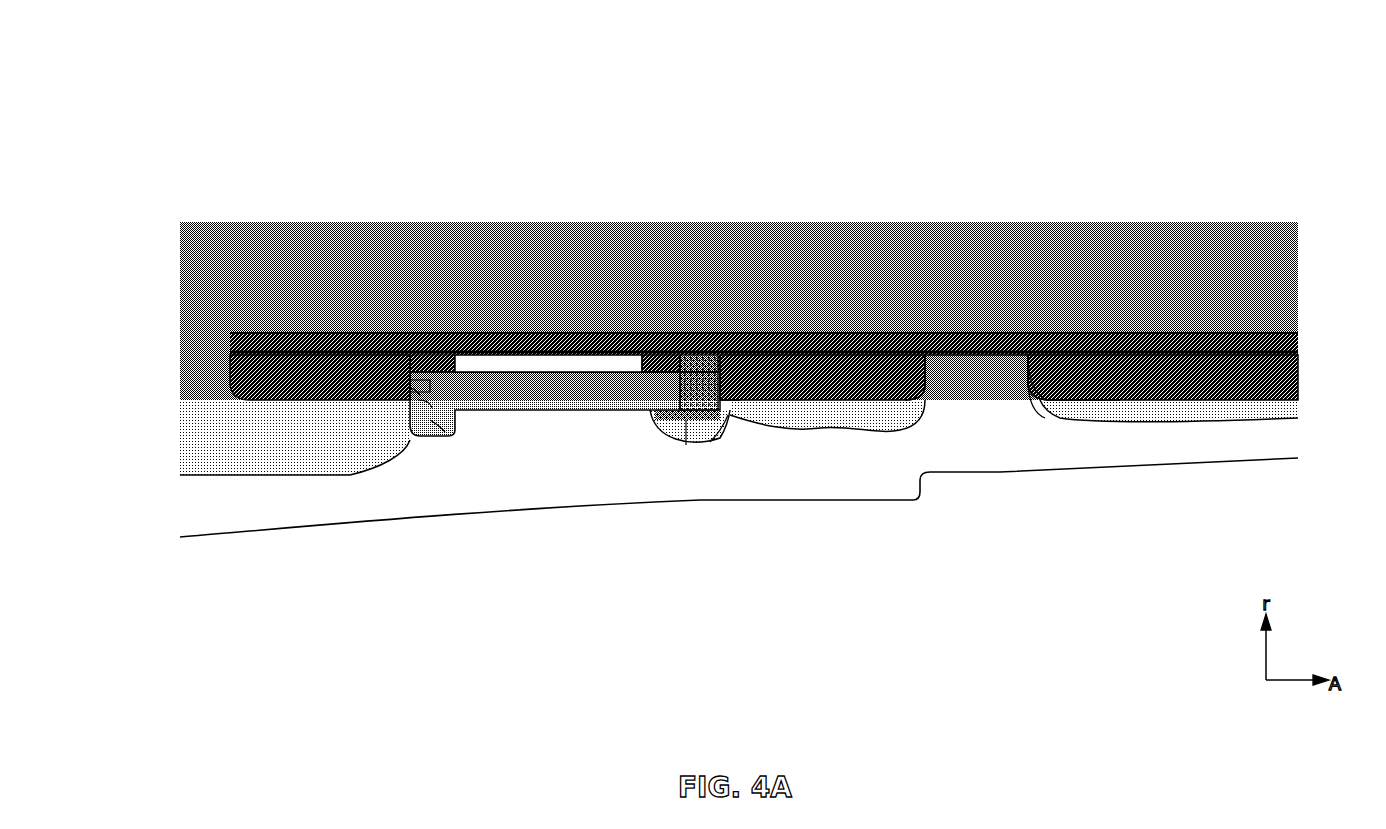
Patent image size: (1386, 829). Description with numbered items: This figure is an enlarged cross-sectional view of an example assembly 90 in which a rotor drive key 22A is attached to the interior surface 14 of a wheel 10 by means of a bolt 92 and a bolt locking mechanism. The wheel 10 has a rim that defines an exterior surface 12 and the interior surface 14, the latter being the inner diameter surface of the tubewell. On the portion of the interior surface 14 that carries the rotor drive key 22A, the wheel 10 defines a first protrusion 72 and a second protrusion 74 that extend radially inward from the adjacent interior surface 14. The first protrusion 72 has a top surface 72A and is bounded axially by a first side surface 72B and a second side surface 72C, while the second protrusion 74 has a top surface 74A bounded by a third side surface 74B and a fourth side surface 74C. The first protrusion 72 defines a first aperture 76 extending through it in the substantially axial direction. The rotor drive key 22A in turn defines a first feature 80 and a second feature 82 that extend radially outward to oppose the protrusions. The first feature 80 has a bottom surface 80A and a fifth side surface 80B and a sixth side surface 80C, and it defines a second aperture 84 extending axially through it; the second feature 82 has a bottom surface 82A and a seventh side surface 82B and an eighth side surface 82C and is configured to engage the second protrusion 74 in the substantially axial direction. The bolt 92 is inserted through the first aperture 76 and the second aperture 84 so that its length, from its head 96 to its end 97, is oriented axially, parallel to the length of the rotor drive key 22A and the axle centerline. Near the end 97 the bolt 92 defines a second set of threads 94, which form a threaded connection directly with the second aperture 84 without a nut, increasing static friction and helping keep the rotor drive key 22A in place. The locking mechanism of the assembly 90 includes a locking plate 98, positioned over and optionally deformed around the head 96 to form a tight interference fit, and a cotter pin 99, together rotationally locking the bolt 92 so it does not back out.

The wheel 10 is at (553, 470).
The exterior surface 12 is at (659, 516).
The interior surface 14 is at (268, 272).
The rotor drive key 22A is at (270, 377).
The first protrusion 72 is at (530, 412).
The top surface 72A is at (514, 352).
The first side surface 72B is at (432, 368).
The second side surface 72C is at (658, 352).
The second protrusion 74 is at (985, 373).
The top surface 74A is at (958, 354).
The third side surface 74B is at (925, 356).
The fourth side surface 74C is at (1025, 372).
The first aperture 76 is at (594, 352).
The first feature 80 is at (702, 348).
The bottom surface 80A is at (688, 438).
The fifth side surface 80B is at (680, 425).
The sixth side surface 80C is at (718, 420).
The second feature 82 is at (1058, 380).
The bottom surface 82A is at (1035, 400).
The seventh side surface 82B is at (1048, 395).
The eighth side surface 82C is at (1070, 396).
The second aperture 84 is at (686, 350).
The assembly 90 is at (181, 92).
The bolt 92 is at (488, 393).
The second set of threads 94 is at (728, 332).
The head 96 is at (425, 400).
The end 97 is at (722, 402).
The locking plate 98 is at (437, 418).
The cotter pin 99 is at (415, 393).